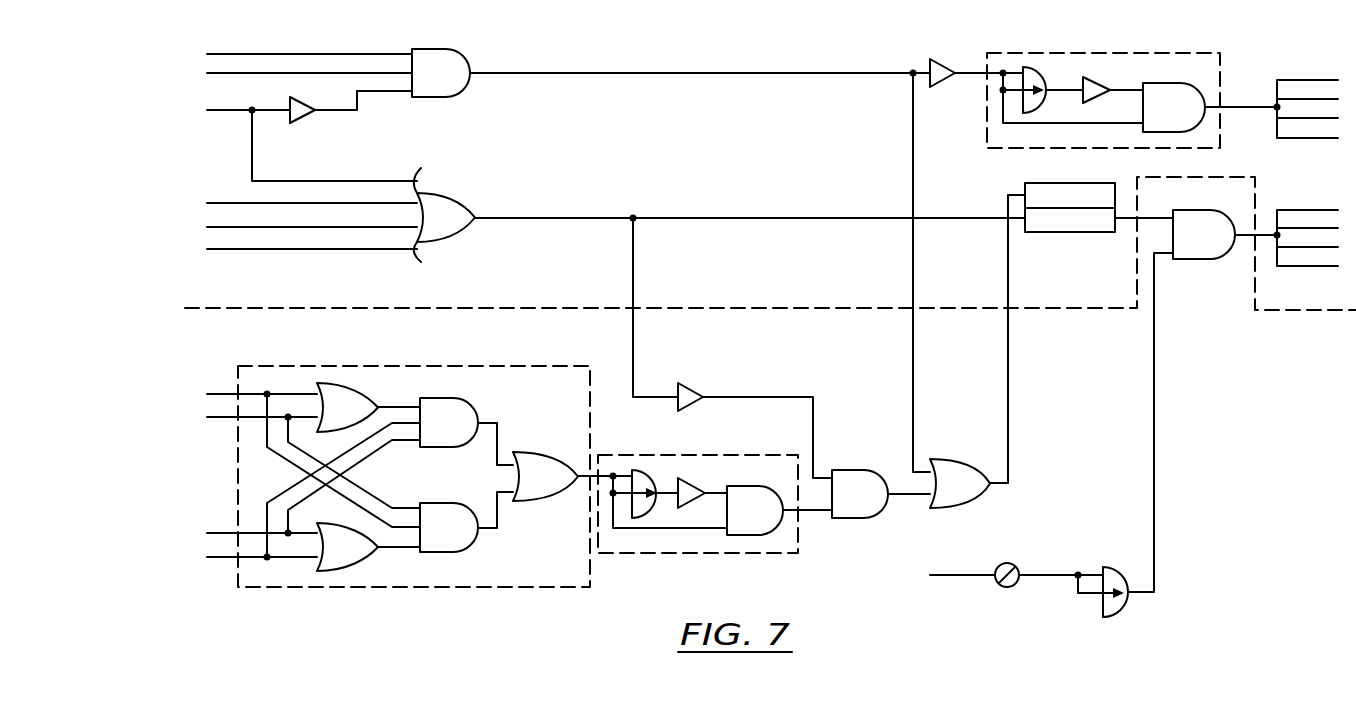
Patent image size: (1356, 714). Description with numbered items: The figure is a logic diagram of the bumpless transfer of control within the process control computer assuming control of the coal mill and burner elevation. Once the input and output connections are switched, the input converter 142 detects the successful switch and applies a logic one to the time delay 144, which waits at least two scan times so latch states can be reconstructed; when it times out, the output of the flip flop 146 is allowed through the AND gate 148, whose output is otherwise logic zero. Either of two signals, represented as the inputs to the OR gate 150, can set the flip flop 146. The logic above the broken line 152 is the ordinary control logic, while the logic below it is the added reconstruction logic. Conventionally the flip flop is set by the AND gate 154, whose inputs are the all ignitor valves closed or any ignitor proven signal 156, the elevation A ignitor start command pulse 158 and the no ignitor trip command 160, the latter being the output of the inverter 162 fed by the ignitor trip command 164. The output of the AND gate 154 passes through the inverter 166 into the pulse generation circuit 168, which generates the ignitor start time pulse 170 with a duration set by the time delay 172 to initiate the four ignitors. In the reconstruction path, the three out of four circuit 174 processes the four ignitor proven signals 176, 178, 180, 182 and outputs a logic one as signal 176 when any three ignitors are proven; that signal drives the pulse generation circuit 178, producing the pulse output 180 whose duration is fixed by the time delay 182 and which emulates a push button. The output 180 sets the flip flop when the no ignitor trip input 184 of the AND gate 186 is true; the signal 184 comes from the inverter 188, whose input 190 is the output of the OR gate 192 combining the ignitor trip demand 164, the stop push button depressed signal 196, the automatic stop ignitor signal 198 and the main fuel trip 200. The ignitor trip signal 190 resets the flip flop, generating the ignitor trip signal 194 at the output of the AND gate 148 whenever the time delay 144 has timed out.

The input converter 142 is at (1008, 563).
The time delay 144 is at (1120, 605).
The flip flop 146 is at (1072, 233).
The AND gate 148 is at (1208, 260).
The OR gate 150 is at (941, 459).
The broken line 152 is at (498, 308).
The AND gate 154 is at (460, 52).
The all ignitor valves closed or any ignitor proven signal 156 is at (287, 54).
The elevation A ignitor start command pulse 158 is at (287, 73).
The no ignitor trip command 160 is at (390, 92).
The inverter 162 is at (303, 122).
The ignitor trip command 164 is at (226, 110).
The inverter 166 is at (943, 58).
The pulse generation circuit 168 is at (1145, 53).
The ignitor start time pulse 170 is at (1262, 85).
The time delay 172 is at (1038, 68).
The three out of four circuit 174 is at (448, 366).
The ignitor proven signal 176 is at (583, 474).
The ignitor proven signal 178 is at (240, 417).
The ignitor proven signal 180 is at (827, 538).
The ignitor proven signal 182 is at (652, 440).
The no ignitor trip signal 184 is at (778, 397).
The AND gate 186 is at (868, 470).
The inverter 188 is at (686, 384).
The ignitor trip signal 190 is at (573, 218).
The OR gate 192 is at (460, 203).
The ignitor trip signal 194 is at (1247, 233).
The stop push button depressed signal 196 is at (290, 203).
The automatic stop ignitor signal 198 is at (290, 227).
The main fuel trip 200 is at (290, 249).